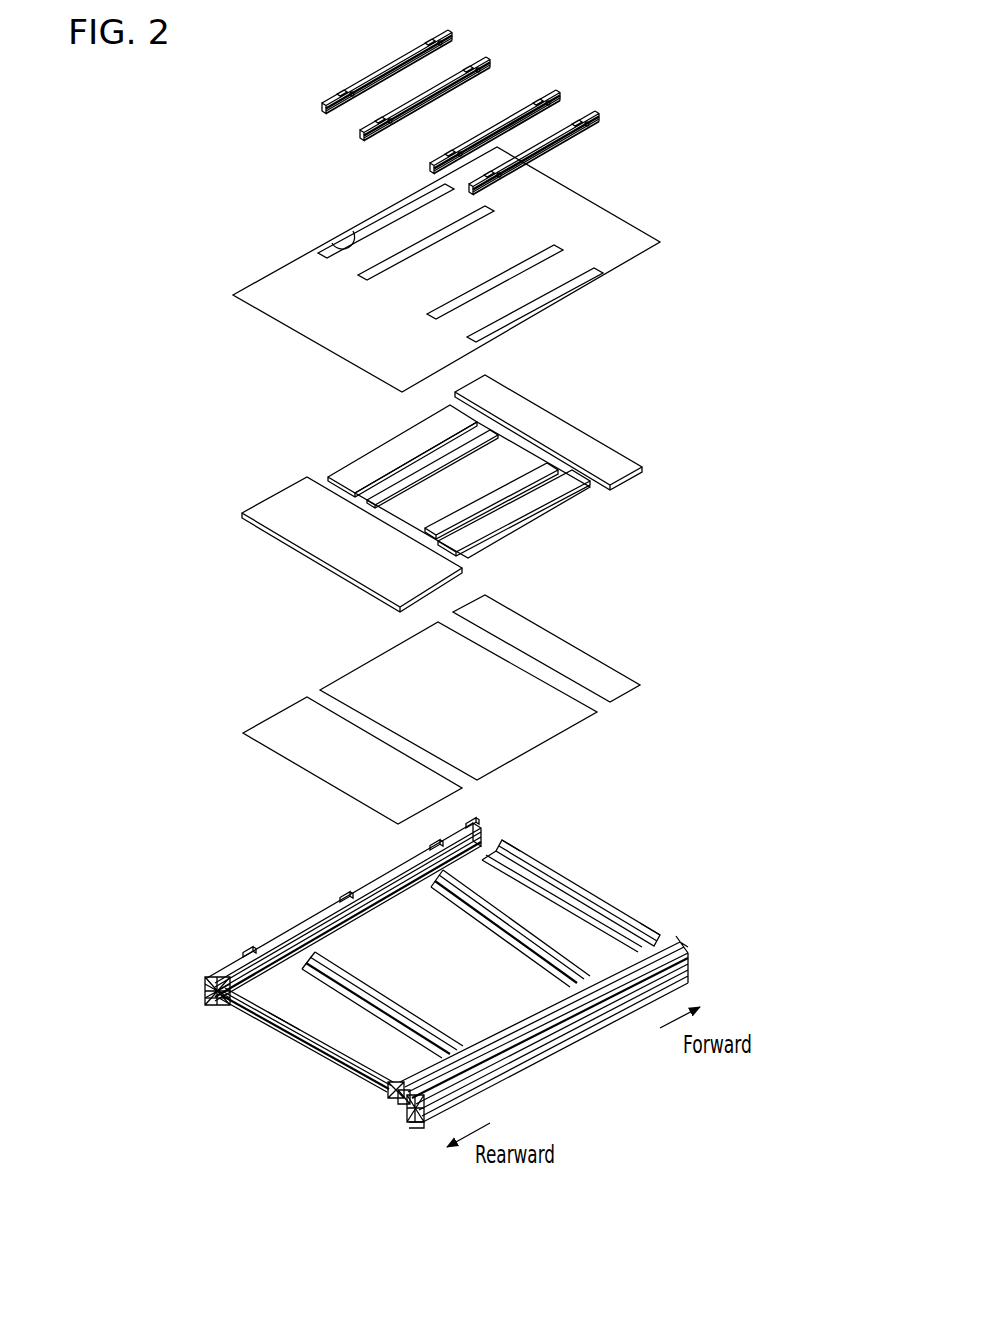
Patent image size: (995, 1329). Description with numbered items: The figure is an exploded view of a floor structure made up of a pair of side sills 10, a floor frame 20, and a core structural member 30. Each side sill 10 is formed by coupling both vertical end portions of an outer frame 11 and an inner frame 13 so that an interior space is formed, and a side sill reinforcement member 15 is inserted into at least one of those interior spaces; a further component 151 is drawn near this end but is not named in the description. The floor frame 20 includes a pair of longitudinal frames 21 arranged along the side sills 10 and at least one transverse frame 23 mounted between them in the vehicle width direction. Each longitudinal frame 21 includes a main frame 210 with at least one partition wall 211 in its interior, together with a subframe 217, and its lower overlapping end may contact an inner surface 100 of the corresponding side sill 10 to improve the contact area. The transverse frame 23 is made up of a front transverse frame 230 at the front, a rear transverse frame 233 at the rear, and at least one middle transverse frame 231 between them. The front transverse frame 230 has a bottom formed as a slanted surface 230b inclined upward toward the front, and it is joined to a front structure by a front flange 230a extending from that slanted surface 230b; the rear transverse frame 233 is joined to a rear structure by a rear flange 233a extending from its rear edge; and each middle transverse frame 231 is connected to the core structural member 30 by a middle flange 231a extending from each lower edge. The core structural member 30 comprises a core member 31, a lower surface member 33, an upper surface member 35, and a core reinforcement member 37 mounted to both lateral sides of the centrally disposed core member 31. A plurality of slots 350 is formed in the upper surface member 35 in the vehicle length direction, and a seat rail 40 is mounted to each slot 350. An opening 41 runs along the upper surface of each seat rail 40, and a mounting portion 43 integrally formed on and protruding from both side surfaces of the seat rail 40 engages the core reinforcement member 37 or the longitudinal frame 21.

The side sill 10 is at (690, 935).
The outer frame 11 is at (688, 962).
The inner frame 13 is at (684, 942).
The side sill reinforcement member 15 is at (420, 1124).
The corner connector 151 is at (417, 1117).
The floor frame 20 is at (650, 815).
The longitudinal frame 21 is at (226, 1010).
The inner surface 100 is at (208, 990).
The main frame 210 is at (403, 1100).
The partition wall 211 is at (390, 1088).
The subframe 217 is at (430, 1068).
The transverse frame 23 is at (167, 796).
The front transverse frame 230 is at (427, 869).
The front flange 230a is at (522, 846).
The slanted surface 230b is at (604, 893).
The middle transverse frame 231 is at (381, 941).
The middle flange 231a is at (484, 912).
The rear transverse frame 233 is at (326, 967).
The rear flange 233a is at (315, 1053).
The core structural member 30 is at (266, 477).
The core member 31 is at (593, 457).
The lower surface member 33 is at (631, 662).
The upper surface member 35 is at (437, 269).
The slot 350 is at (340, 238).
The core reinforcement member 37 is at (413, 470).
The seat rail 40 is at (312, 107).
The opening 41 is at (360, 80).
The mounting portion 43 is at (441, 150).